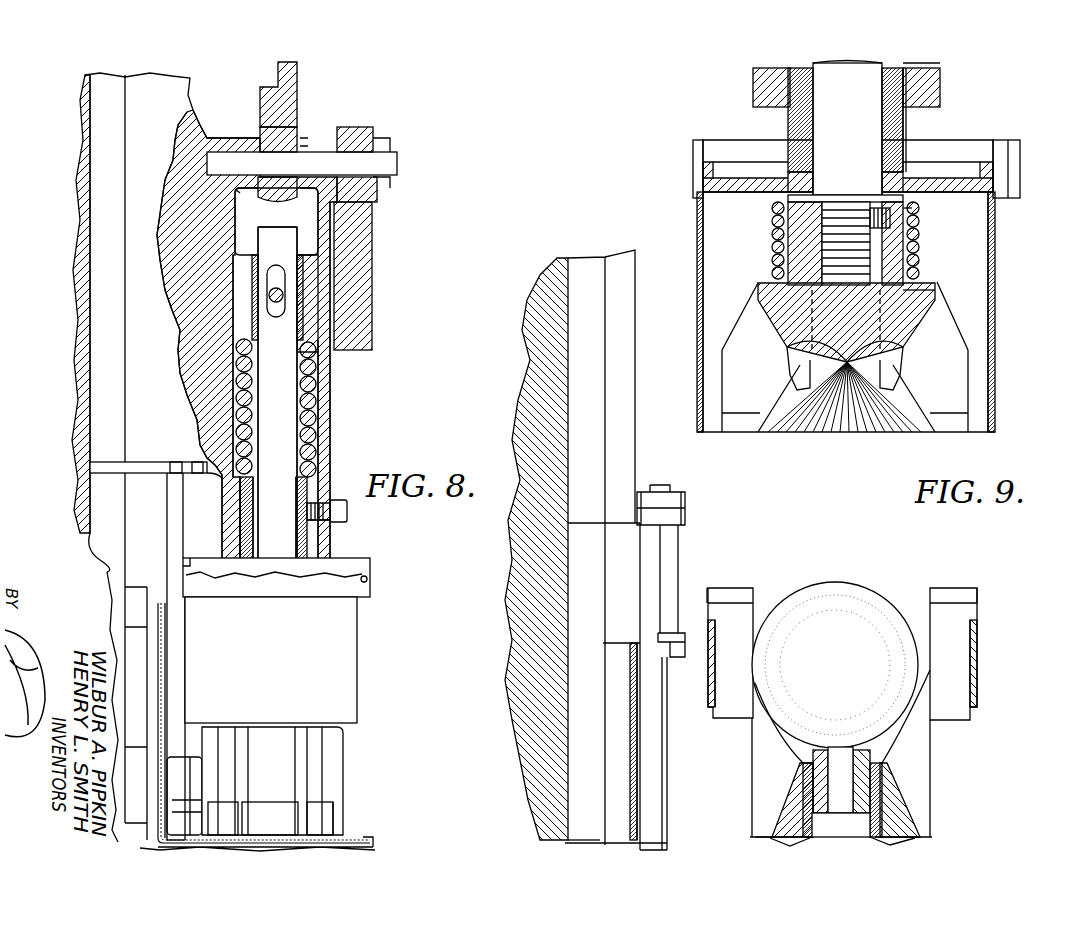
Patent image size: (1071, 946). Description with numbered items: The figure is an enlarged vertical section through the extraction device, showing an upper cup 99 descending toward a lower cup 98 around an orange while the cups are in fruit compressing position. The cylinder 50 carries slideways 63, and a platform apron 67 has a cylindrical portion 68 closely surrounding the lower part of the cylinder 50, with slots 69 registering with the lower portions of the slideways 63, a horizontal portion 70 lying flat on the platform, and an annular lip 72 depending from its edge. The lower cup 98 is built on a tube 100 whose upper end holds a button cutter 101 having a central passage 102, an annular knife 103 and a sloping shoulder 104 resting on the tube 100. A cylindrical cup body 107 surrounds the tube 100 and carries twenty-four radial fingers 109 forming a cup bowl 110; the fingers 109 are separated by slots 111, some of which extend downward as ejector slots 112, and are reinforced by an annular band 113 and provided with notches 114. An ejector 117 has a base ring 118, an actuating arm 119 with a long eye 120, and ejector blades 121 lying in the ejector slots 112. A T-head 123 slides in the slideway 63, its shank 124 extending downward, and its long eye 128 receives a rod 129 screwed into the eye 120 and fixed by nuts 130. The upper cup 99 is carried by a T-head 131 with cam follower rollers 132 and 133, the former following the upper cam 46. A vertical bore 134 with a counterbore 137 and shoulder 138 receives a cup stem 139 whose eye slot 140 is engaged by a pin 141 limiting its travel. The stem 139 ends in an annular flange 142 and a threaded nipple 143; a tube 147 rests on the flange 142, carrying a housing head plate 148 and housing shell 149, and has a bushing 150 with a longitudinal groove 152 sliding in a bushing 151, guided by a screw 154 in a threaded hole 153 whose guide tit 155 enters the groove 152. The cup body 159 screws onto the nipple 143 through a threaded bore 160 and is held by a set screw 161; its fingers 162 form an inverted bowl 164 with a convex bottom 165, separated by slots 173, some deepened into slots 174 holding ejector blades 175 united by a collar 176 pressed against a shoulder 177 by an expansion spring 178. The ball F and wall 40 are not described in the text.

In FIG. 8, the outer wall 40 is at (362, 226).
In FIG. 8, the upper cam 46 is at (296, 96).
In FIG. 8, the cylinder 50 is at (74, 275).
In FIG. 9, the cylinder 50 is at (508, 402).
In FIG. 8, the slideways 63 is at (93, 371).
In FIG. 9, the slideways 63 is at (572, 328).
In FIG. 8, the apron 67 is at (168, 677).
In FIG. 9, the apron 67 is at (640, 758).
In FIG. 8, the cylindrical portion 68 is at (160, 708).
In FIG. 9, the cylindrical portion 68 is at (640, 797).
In FIG. 8, the slots 69 is at (185, 607).
In FIG. 8, the horizontal portion 70 is at (267, 842).
In FIG. 8, the annular lip 72 is at (366, 845).
In FIG. 8, the lower cup 98 is at (300, 771).
In FIG. 9, the lower cup 98 is at (865, 703).
In FIG. 9, the upper cup 99 is at (978, 333).
In FIG. 9, the tube 100 is at (842, 846).
In FIG. 9, the button cutter 101 is at (884, 768).
In FIG. 9, the central passage 102 is at (841, 825).
In FIG. 9, the annular knife 103 is at (858, 752).
In FIG. 9, the sloping shoulder 104 is at (872, 772).
In FIG. 9, the cup body 107 is at (898, 835).
In FIG. 9, the fingers 109 is at (727, 592).
In FIG. 9, the cup bowl 110 is at (928, 690).
In FIG. 9, the slots 111 is at (772, 830).
In FIG. 9, the ejector slots 112 is at (782, 812).
In FIG. 9, the annular band 113 is at (978, 685).
In FIG. 9, the notches 114 is at (735, 722).
In FIG. 8, the ejector 117 is at (352, 739).
In FIG. 8, the base ring 118 is at (322, 820).
In FIG. 8, the actuating arm 119 is at (192, 770).
In FIG. 8, the long eye 120 is at (180, 817).
In FIG. 8, the ejector blades 121 is at (360, 757).
In FIG. 8, the T-head 123 is at (88, 538).
In FIG. 9, the T-head 123 is at (576, 593).
In FIG. 8, the shank 124 is at (97, 503).
In FIG. 9, the shank 124 is at (572, 685).
In FIG. 8, the long eye 128 is at (183, 524).
In FIG. 9, the long eye 128 is at (680, 552).
In FIG. 8, the rod 129 is at (174, 690).
In FIG. 9, the rod 129 is at (667, 692).
In FIG. 9, the nuts 130 is at (680, 507).
In FIG. 8, the T-head 131 is at (192, 321).
In FIG. 9, the T-head 131 is at (945, 80).
In FIG. 8, the cam follower roller 132 is at (270, 138).
In FIG. 8, the cam follower roller 133 is at (353, 127).
In FIG. 8, the vertical bore 134 is at (290, 328).
In FIG. 8, the counterbore 137 is at (308, 437).
In FIG. 9, the counterbore 137 is at (915, 105).
In FIG. 8, the shoulder 138 is at (247, 350).
In FIG. 8, the cup stem 139 is at (290, 386).
In FIG. 9, the cup stem 139 is at (855, 87).
In FIG. 8, the eye slot 140 is at (280, 264).
In FIG. 8, the pin 141 is at (275, 315).
In FIG. 9, the annular flange 142 is at (800, 200).
In FIG. 9, the threaded nipple 143 is at (830, 220).
In FIG. 8, the tube 147 is at (296, 556).
In FIG. 9, the tube 147 is at (813, 147).
In FIG. 9, the housing head plate 148 is at (735, 165).
In FIG. 8, the housing shell 149 is at (352, 660).
In FIG. 8, the bushing 150 is at (308, 488).
In FIG. 9, the bushing 150 is at (788, 126).
In FIG. 9, the bushing 151 is at (915, 68).
In FIG. 9, the longitudinal groove 152 is at (908, 135).
In FIG. 8, the threaded hole 153 is at (331, 522).
In FIG. 8, the screw 154 is at (348, 513).
In FIG. 8, the guide tit 155 is at (307, 513).
In FIG. 9, the cup body 159 is at (912, 305).
In FIG. 9, the threaded bore 160 is at (868, 210).
In FIG. 9, the set screw 161 is at (912, 210).
In FIG. 9, the fingers 162 is at (765, 380).
In FIG. 9, the inverted bowl 164 is at (905, 428).
In FIG. 9, the bottom 165 is at (800, 352).
In FIG. 9, the slots 173 is at (782, 312).
In FIG. 9, the slots 174 is at (758, 300).
In FIG. 9, the ejector blades 175 is at (885, 380).
In FIG. 9, the collar 176 is at (918, 265).
In FIG. 9, the shoulder 177 is at (925, 292).
In FIG. 9, the expansion spring 178 is at (772, 243).
In FIG. 9, the ball float F is at (855, 592).